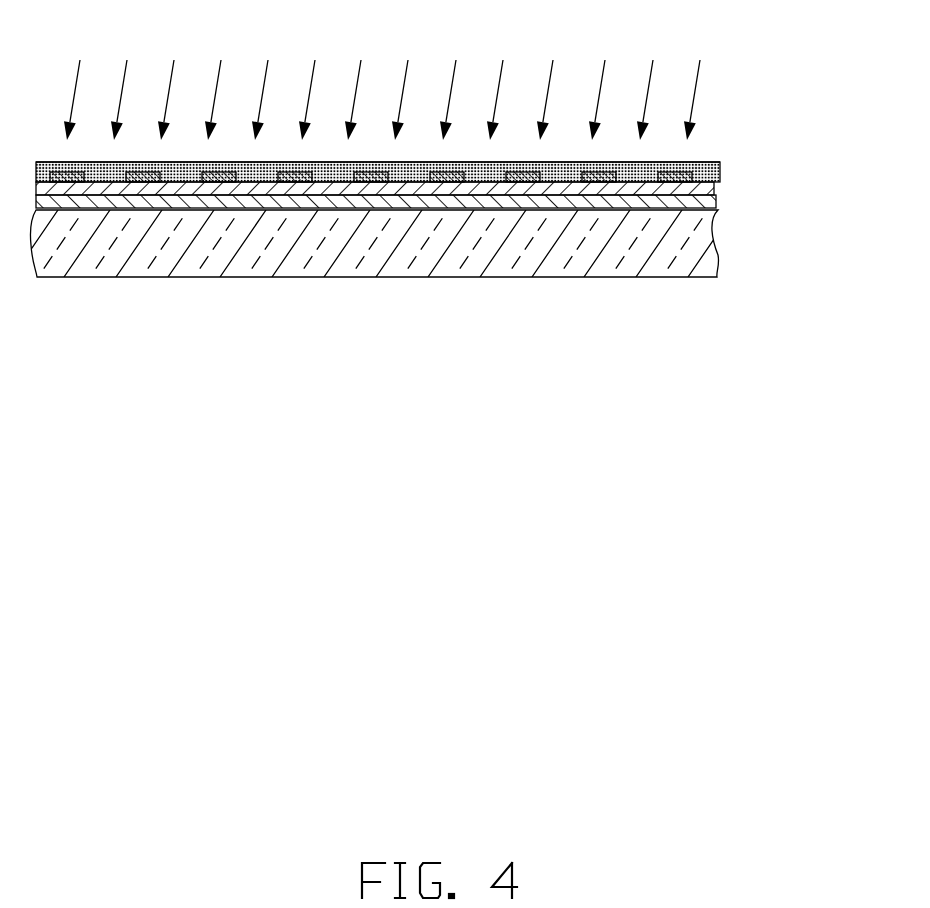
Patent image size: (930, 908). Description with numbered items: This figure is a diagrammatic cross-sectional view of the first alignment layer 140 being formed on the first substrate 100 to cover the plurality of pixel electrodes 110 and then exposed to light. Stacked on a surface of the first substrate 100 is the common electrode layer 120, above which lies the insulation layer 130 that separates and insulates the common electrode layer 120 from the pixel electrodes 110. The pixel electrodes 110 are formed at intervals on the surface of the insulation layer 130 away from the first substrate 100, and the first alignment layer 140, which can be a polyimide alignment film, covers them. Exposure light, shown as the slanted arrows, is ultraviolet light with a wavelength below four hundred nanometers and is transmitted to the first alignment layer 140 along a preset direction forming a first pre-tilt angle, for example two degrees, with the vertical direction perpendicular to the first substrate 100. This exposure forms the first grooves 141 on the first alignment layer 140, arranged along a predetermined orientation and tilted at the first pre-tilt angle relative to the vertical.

The first substrate 100 is at (690, 250).
The pixel electrodes 110 is at (690, 170).
The common electrode layer 120 is at (714, 204).
The insulation layer 130 is at (712, 187).
The first alignment layer 140 is at (720, 172).
The first grooves 141 is at (573, 163).